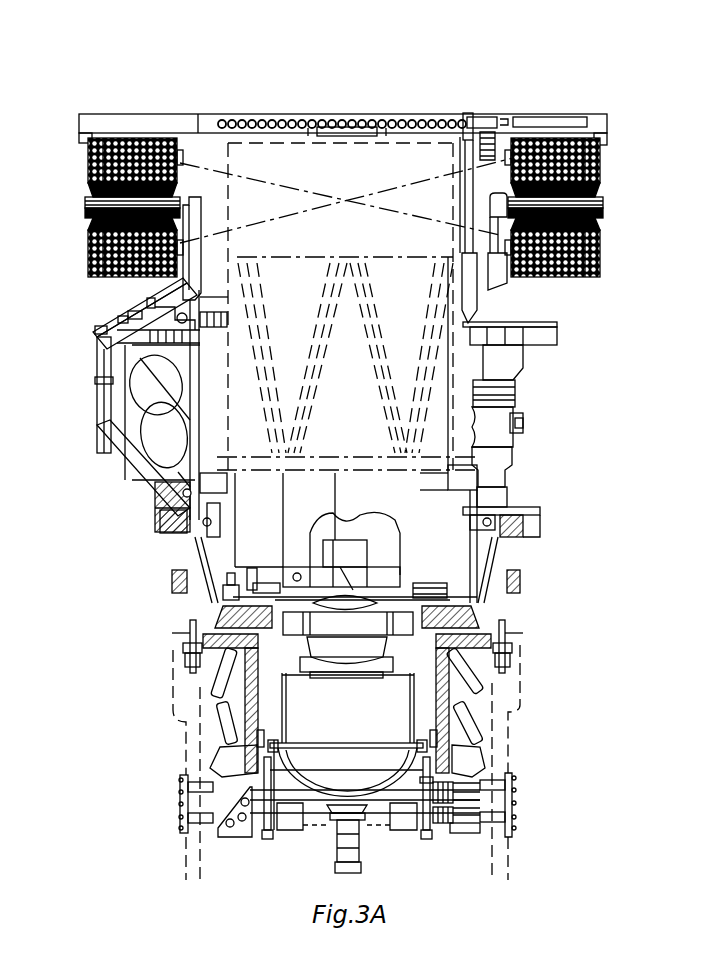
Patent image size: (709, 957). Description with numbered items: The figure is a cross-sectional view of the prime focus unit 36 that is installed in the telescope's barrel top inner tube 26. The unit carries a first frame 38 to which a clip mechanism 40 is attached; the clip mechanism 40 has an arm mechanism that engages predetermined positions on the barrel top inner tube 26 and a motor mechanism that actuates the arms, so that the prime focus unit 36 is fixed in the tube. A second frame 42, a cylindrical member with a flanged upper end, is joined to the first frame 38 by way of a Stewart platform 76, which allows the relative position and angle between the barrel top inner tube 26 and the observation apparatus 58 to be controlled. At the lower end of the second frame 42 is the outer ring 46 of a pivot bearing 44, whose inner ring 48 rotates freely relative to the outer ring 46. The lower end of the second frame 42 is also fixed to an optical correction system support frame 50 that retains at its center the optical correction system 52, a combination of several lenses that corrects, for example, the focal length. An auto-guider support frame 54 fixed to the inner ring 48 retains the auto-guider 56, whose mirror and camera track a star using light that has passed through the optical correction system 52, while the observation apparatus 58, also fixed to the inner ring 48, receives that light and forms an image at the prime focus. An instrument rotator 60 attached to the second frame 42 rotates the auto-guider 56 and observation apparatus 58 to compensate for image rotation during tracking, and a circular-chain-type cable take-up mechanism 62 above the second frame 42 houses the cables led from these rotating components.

The barrel top inner tube 26 is at (178, 768).
The prime focus unit 36 is at (130, 108).
The first frame 38 is at (522, 578).
The clip mechanism 40 is at (483, 730).
The second frame 42 is at (543, 337).
The pivot bearing 44 is at (119, 563).
The outer ring 46 is at (205, 541).
The inner ring 48 is at (182, 563).
The optical correction system support frame 50 is at (197, 611).
The optical correction system 52 is at (292, 707).
The auto-guider support frame 54 is at (478, 583).
The auto-guider 56 is at (314, 573).
The observation apparatus 58 is at (399, 272).
The instrument rotator 60 is at (495, 430).
The cable take-up mechanism 62 is at (600, 160).
The Stewart platform 76 is at (140, 392).